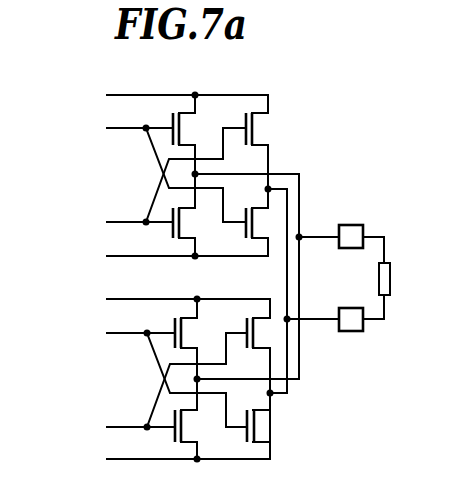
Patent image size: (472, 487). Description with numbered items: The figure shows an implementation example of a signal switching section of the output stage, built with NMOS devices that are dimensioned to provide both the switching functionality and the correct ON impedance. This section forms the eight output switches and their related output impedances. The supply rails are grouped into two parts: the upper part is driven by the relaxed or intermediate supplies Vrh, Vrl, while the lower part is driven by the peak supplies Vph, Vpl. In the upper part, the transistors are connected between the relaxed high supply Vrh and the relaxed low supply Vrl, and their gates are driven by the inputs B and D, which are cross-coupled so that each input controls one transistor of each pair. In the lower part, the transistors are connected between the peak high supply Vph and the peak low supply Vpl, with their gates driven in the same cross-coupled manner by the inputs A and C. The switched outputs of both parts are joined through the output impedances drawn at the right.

The relaxed supply Vrh is at (170, 95).
The input signal B is at (168, 169).
The input signal D is at (169, 181).
The relaxed supply Vrl is at (173, 258).
The peak supply Vph is at (170, 299).
The input signal A is at (170, 374).
The input signal C is at (172, 385).
The peak supply Vpl is at (174, 458).